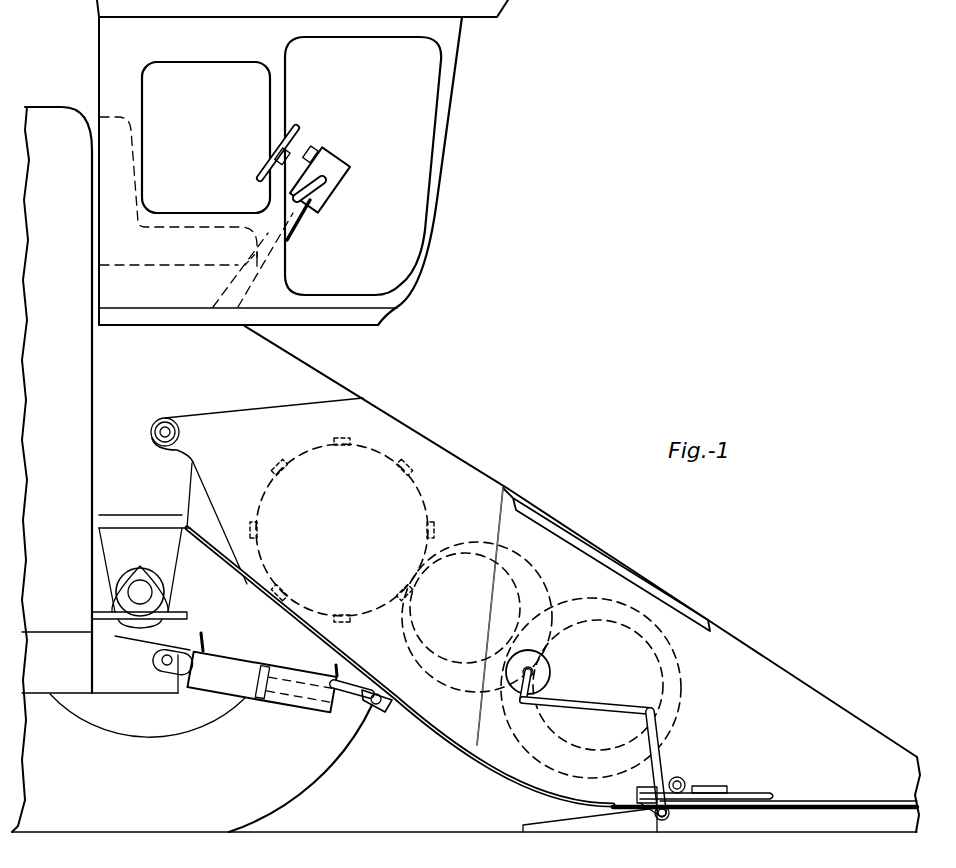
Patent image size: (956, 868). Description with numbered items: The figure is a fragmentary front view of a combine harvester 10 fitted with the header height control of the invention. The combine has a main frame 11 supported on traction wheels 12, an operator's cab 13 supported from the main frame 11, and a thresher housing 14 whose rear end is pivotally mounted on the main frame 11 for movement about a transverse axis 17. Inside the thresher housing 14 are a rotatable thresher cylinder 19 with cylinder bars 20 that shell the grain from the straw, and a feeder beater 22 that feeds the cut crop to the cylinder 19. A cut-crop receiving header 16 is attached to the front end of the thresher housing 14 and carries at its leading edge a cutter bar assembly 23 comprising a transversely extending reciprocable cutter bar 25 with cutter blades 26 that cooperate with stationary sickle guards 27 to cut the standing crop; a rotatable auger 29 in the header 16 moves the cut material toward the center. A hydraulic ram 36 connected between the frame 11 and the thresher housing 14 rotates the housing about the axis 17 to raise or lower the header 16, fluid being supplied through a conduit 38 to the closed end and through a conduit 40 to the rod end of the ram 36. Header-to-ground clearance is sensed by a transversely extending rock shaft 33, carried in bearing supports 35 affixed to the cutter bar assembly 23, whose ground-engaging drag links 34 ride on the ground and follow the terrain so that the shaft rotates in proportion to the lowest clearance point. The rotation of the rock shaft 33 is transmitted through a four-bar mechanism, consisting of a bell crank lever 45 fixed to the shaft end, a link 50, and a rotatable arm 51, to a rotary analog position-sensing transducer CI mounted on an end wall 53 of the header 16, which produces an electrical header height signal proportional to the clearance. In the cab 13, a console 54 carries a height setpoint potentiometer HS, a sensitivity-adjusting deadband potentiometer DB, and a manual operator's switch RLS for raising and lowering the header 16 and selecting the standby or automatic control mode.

The combine harvester 10 is at (417, 420).
The main frame 11 is at (168, 572).
The traction wheels 12 is at (293, 797).
The operator's cab 13 is at (432, 198).
The thresher housing 14 is at (503, 446).
The header 16 is at (643, 537).
The transverse axis 17 is at (165, 418).
The thresher cylinder 19 is at (318, 450).
The cylinder bars 20 is at (275, 470).
The feeder beater 22 is at (450, 553).
The cutter bar assembly 23 is at (731, 805).
The cutter bar 25 is at (681, 778).
The cutter blades 26 is at (710, 788).
The sickle guards 27 is at (740, 793).
The auger 29 is at (647, 637).
The rock shaft 33 is at (666, 820).
The drag links 34 is at (595, 830).
The bearing supports 35 is at (648, 827).
The hydraulic ram 36 is at (245, 692).
The conduit 38 is at (208, 642).
The conduit 40 is at (333, 670).
The bell crank lever 45 is at (660, 727).
The link 50 is at (614, 703).
The rotatable arm 51 is at (523, 710).
The end wall 53 is at (543, 565).
The console 54 is at (348, 176).
The height setpoint potentiometer HS is at (305, 148).
The sensitivity-adjusting potentiometer DB is at (318, 143).
The manual operator's switch RLS is at (287, 182).
The rotary analog position-sensing transducer CI is at (515, 660).